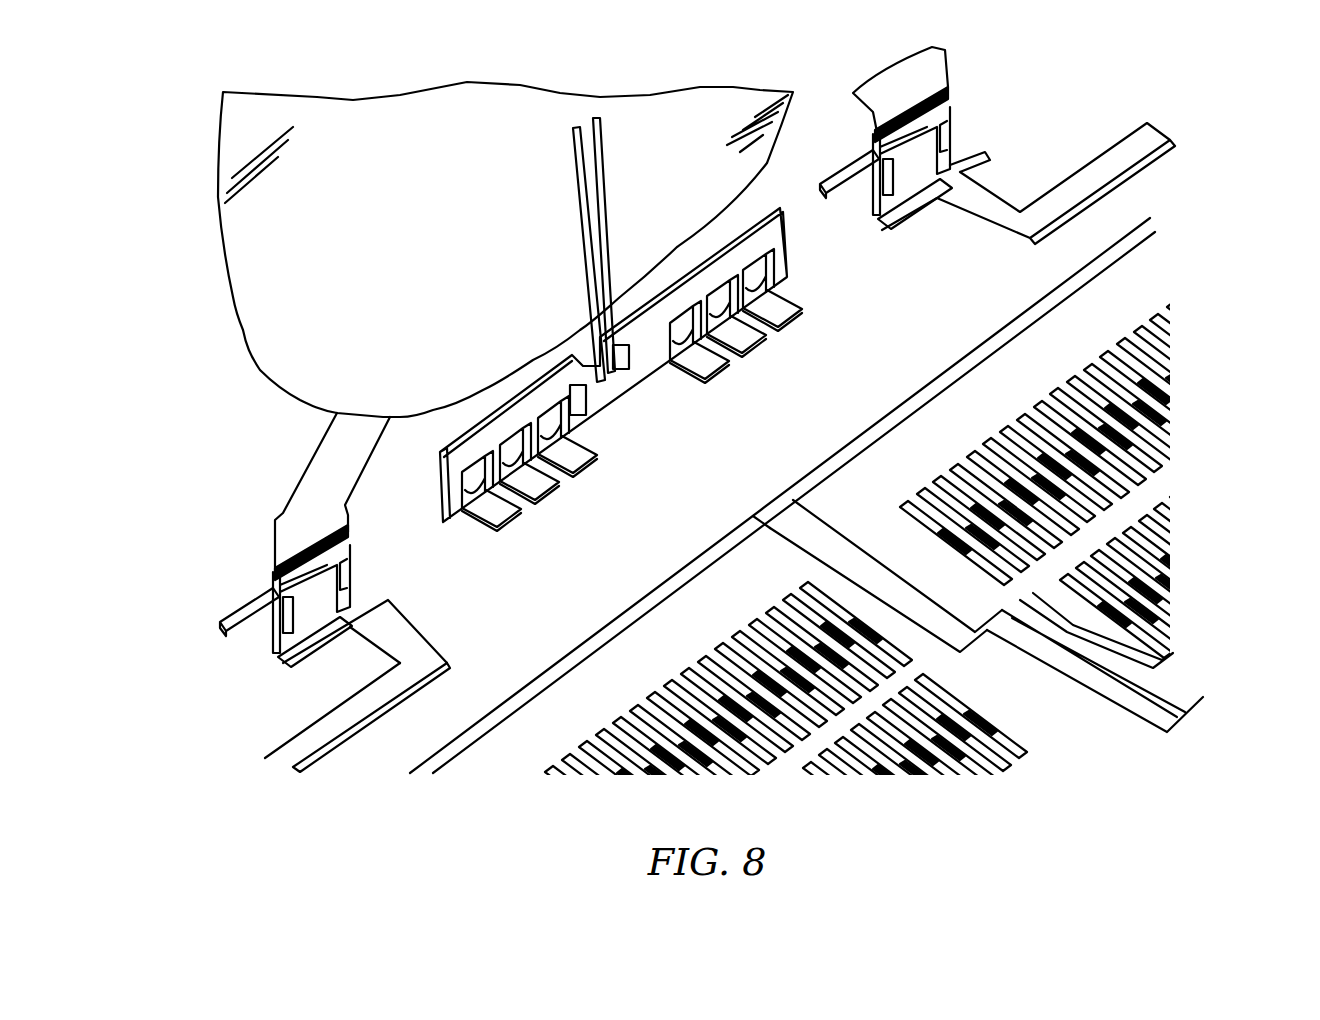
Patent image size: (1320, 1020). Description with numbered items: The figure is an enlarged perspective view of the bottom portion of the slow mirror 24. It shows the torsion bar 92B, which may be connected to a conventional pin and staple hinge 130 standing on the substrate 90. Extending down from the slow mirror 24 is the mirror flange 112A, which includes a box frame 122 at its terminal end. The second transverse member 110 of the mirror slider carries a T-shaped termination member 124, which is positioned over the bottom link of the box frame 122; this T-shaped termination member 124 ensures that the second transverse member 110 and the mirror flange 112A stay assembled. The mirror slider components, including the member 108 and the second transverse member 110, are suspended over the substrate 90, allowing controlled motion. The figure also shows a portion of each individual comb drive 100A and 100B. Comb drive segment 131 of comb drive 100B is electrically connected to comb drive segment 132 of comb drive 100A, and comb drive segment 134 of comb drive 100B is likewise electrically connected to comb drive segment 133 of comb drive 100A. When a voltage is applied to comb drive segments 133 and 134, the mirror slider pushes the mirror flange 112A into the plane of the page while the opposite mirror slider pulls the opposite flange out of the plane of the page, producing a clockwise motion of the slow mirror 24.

The slow mirror 24 is at (378, 132).
The torsion bar 92B is at (587, 327).
The pin and staple hinge 130 is at (773, 230).
The substrate 90 is at (838, 368).
The comb drive segment 131 is at (815, 500).
The comb drive segment 133 is at (757, 525).
The mirror flange 112A is at (318, 487).
The T-shaped termination member 124 is at (242, 617).
The box frame 122 is at (353, 578).
The second transverse member 110 is at (398, 648).
The mirror slider component 108 is at (317, 737).
The comb drive 100A is at (858, 790).
The comb drive 100B is at (1089, 443).
The comb drive segment 134 is at (1100, 648).
The comb drive segment 132 is at (1102, 735).